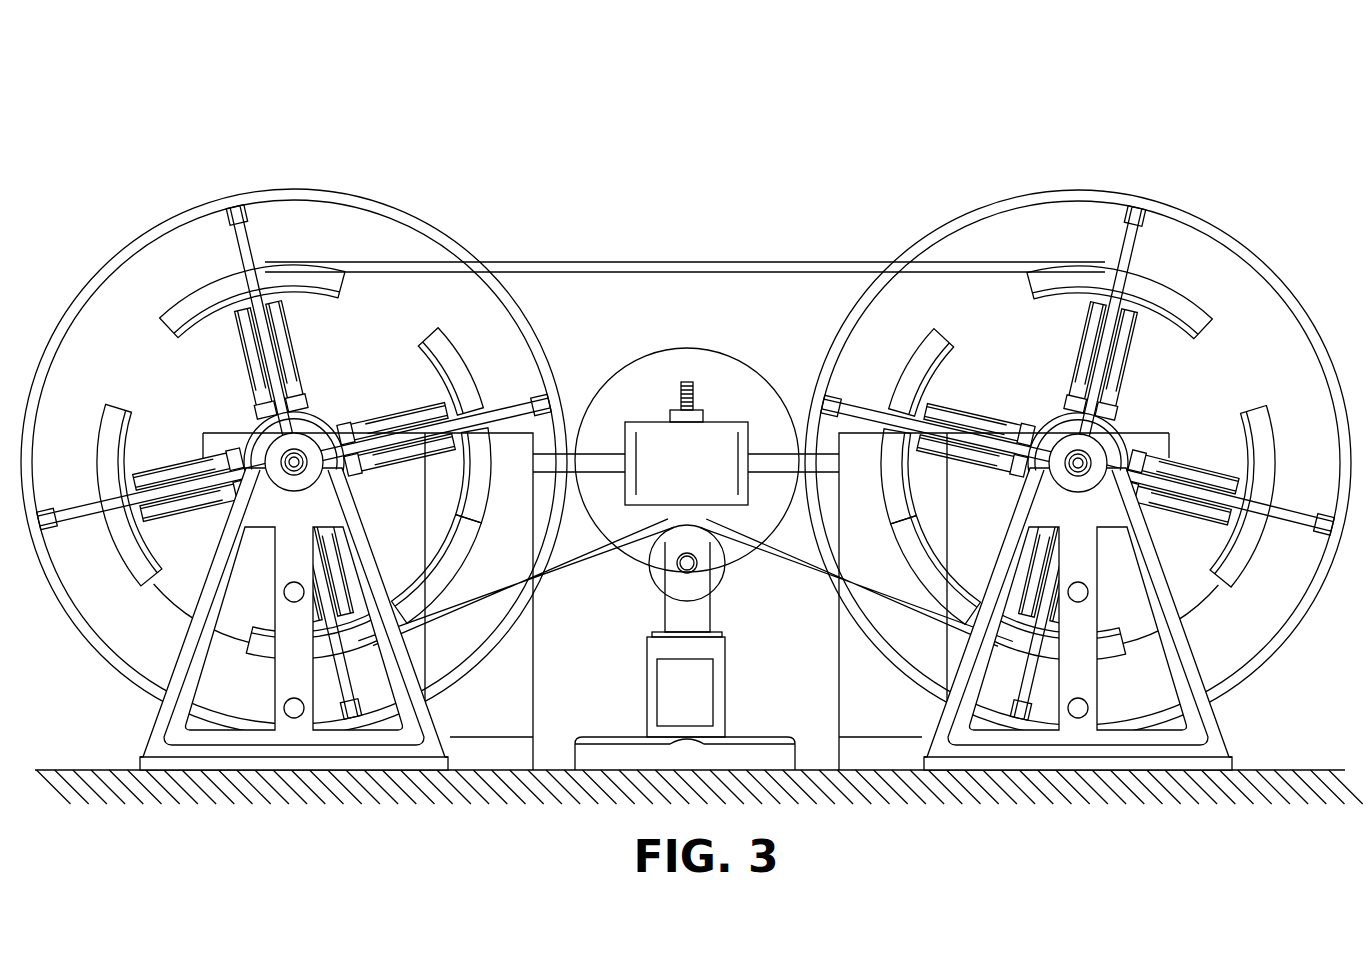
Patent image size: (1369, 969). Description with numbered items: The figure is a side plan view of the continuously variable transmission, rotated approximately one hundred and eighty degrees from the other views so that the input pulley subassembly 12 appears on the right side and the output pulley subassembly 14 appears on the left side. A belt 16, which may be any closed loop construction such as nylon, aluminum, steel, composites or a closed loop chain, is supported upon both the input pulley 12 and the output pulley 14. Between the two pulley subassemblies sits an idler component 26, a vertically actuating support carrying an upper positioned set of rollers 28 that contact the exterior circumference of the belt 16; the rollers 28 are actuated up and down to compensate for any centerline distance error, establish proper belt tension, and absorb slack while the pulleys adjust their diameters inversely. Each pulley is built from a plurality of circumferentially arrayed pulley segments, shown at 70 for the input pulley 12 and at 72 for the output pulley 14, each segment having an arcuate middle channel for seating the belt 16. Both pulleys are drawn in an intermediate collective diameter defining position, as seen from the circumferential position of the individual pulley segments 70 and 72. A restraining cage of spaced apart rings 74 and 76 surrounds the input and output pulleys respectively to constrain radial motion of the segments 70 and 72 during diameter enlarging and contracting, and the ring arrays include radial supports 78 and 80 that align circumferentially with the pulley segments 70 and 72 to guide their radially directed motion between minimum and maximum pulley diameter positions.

The input pulley subassembly 12 is at (1078, 420).
The output pulley subassembly 14 is at (294, 420).
The belt 16 is at (727, 262).
The idler component 26 is at (658, 600).
The rollers 28 is at (738, 565).
The pulley segments 70 is at (1101, 453).
The pulley segments 72 is at (284, 457).
The rings 74 is at (1078, 463).
The rings 76 is at (294, 455).
The radial supports 78 is at (1102, 322).
The radial supports 80 is at (265, 293).